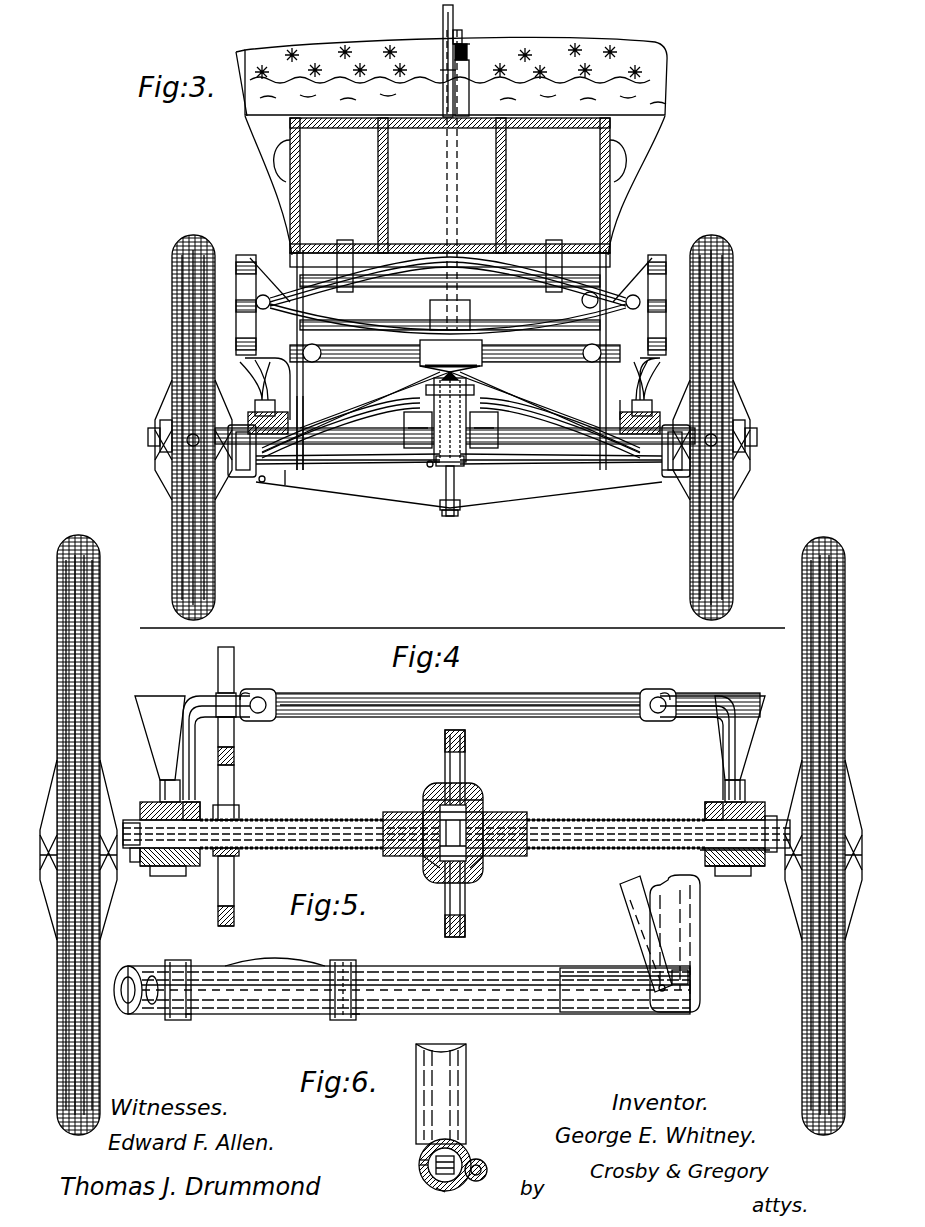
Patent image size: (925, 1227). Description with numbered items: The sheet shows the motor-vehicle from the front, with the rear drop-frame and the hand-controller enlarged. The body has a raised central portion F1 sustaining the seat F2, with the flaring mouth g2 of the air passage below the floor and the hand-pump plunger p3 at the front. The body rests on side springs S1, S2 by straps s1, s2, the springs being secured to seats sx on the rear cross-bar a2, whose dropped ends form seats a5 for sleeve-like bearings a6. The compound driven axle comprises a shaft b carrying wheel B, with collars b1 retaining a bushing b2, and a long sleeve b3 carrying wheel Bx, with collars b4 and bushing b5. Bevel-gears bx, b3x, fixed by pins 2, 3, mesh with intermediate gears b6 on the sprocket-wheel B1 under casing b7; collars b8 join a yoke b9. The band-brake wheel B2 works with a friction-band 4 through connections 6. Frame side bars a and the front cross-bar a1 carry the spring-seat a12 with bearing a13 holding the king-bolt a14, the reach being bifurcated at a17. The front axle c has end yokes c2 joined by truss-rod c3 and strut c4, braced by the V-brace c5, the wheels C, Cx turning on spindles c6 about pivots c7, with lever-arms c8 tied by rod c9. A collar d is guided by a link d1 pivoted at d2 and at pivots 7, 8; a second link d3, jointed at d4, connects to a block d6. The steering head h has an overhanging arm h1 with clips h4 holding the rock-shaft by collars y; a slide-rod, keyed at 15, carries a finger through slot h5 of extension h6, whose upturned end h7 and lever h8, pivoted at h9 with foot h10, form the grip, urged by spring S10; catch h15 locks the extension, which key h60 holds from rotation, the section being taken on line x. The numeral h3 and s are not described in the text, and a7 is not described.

In FIG. 3, the seat F2 is at (640, 66).
In FIG. 3, the central portion of the body F1 is at (455, 180).
In FIG. 3, the steering head h is at (440, 30).
In FIG. 5, the steering head h is at (402, 990).
In FIG. 6, the steering head h is at (441, 1094).
In FIG. 5, the overhanging arm h1 is at (128, 1010).
In FIG. 6, the overhanging arm h1 is at (420, 1172).
In FIG. 3, the handle collar h3 is at (468, 54).
In FIG. 5, the handle collar h3 is at (252, 1004).
In FIG. 5, the clips h4 is at (178, 966).
In FIG. 6, the clips h4 is at (464, 1142).
In FIG. 5, the slot h5 is at (686, 975).
In FIG. 3, the tubular extension h6 is at (442, 40).
In FIG. 5, the tubular extension h6 is at (582, 978).
In FIG. 3, the upturned end of extension h7 is at (443, 70).
In FIG. 5, the upturned end of extension h7 is at (700, 936).
In FIG. 6, the upturned end of extension h7 is at (466, 1096).
In FIG. 3, the lever h8 is at (462, 38).
In FIG. 6, the lever h8 is at (442, 1060).
In FIG. 3, the pivot h9 is at (466, 44).
In FIG. 5, the pivot h9 is at (520, 985).
In FIG. 6, the pivot h9 is at (470, 1152).
In FIG. 5, the foot of lever h10 is at (698, 1006).
In FIG. 6, the foot of lever h10 is at (420, 1162).
In FIG. 5, the spring-catch h15 is at (266, 966).
In FIG. 6, the key h60 is at (436, 1190).
In FIG. 6, the key 15 is at (476, 1181).
In FIG. 5, the section line x is at (340, 962).
In FIG. 5, the collars y is at (185, 1010).
In FIG. 3, the rear propelling wheel B is at (720, 245).
In FIG. 4, the rear propelling wheel B is at (822, 540).
In FIG. 3, the rear propelling wheel Bx is at (190, 245).
In FIG. 4, the rear propelling wheel Bx is at (80, 540).
In FIG. 4, the sprocket-wheel B1 is at (466, 755).
In FIG. 3, the band-brake wheel B2 is at (300, 396).
In FIG. 4, the band-brake wheel B2 is at (236, 762).
In FIG. 3, the front wheel C is at (715, 300).
In FIG. 3, the front wheel Cx is at (185, 300).
In FIG. 3, the side spring S1 is at (247, 258).
In FIG. 3, the strap s1 is at (270, 274).
In FIG. 3, the side spring S2 is at (657, 258).
In FIG. 3, the strap s2 is at (629, 272).
In FIG. 3, the leaf spring s is at (340, 272).
In FIG. 3, the spring seat sx is at (252, 378).
In FIG. 4, the spring seat sx is at (150, 696).
In FIG. 4, the spring S10 is at (662, 960).
In FIG. 3, the hand-pump plunger p3 is at (594, 296).
In FIG. 3, the flaring mouth g2 is at (450, 288).
In FIG. 3, the side bars a is at (458, 318).
In FIG. 4, the side bars a is at (260, 698).
In FIG. 3, the front cross-bar a1 is at (441, 395).
In FIG. 4, the rear cross-bar a2 is at (622, 700).
In FIG. 4, the seats a5 is at (180, 806).
In FIG. 3, the sleeve-like bearings a6 is at (650, 410).
In FIG. 4, the sleeve-like bearings a6 is at (752, 850).
In FIG. 3, the cross bar a7 is at (352, 362).
In FIG. 3, the spring-seat a12 is at (450, 333).
In FIG. 3, the depending bearing a13 is at (431, 377).
In FIG. 3, the king-bolt a14 is at (525, 398).
In FIG. 3, the bifurcation of front reach a17 is at (422, 394).
In FIG. 3, the shaft b is at (592, 432).
In FIG. 4, the shaft b is at (268, 824).
In FIG. 4, the collars b1 is at (706, 822).
In FIG. 4, the bushing b2 is at (730, 866).
In FIG. 4, the long sleeve b3 is at (326, 846).
In FIG. 4, the bevel-gear b3x is at (425, 795).
In FIG. 4, the collars b4 is at (136, 850).
In FIG. 3, the bushing b5 is at (336, 428).
In FIG. 4, the bushing b5 is at (148, 866).
In FIG. 4, the intermediate gears b6 is at (468, 788).
In FIG. 4, the cap or casing b7 is at (440, 790).
In FIG. 3, the collars b8 is at (479, 414).
In FIG. 4, the collars b8 is at (512, 815).
In FIG. 4, the yoke b9 is at (400, 815).
In FIG. 4, the bevel-gear bx is at (486, 805).
In FIG. 3, the front axle c is at (586, 458).
In FIG. 3, the vertical outturned yokes c2 is at (242, 470).
In FIG. 3, the truss-rod c3 is at (450, 512).
In FIG. 3, the vertical strut c4 is at (458, 488).
In FIG. 3, the V-brace c5 is at (360, 414).
In FIG. 3, the spindles c6 is at (172, 438).
In FIG. 3, the vertical pivots c7 is at (175, 460).
In FIG. 3, the lever-arms c8 is at (672, 476).
In FIG. 3, the rod c9 is at (240, 476).
In FIG. 3, the collar d is at (466, 460).
In FIG. 3, the link d1 is at (356, 462).
In FIG. 4, the link d1 is at (725, 852).
In FIG. 3, the pivot d2 is at (262, 480).
In FIG. 3, the second link d3 is at (394, 462).
In FIG. 3, the joint d4 is at (441, 393).
In FIG. 4, the joint d4 is at (170, 785).
In FIG. 4, the block d6 is at (140, 808).
In FIG. 4, the pin 2 is at (490, 852).
In FIG. 4, the pin 3 is at (422, 852).
In FIG. 3, the friction-band 4 is at (290, 480).
In FIG. 4, the friction-band 4 is at (225, 936).
In FIG. 4, the intermediate connections 6 is at (236, 664).
In FIG. 3, the horizontal pivot 7 is at (428, 468).
In FIG. 3, the vertical pivot 8 is at (440, 462).